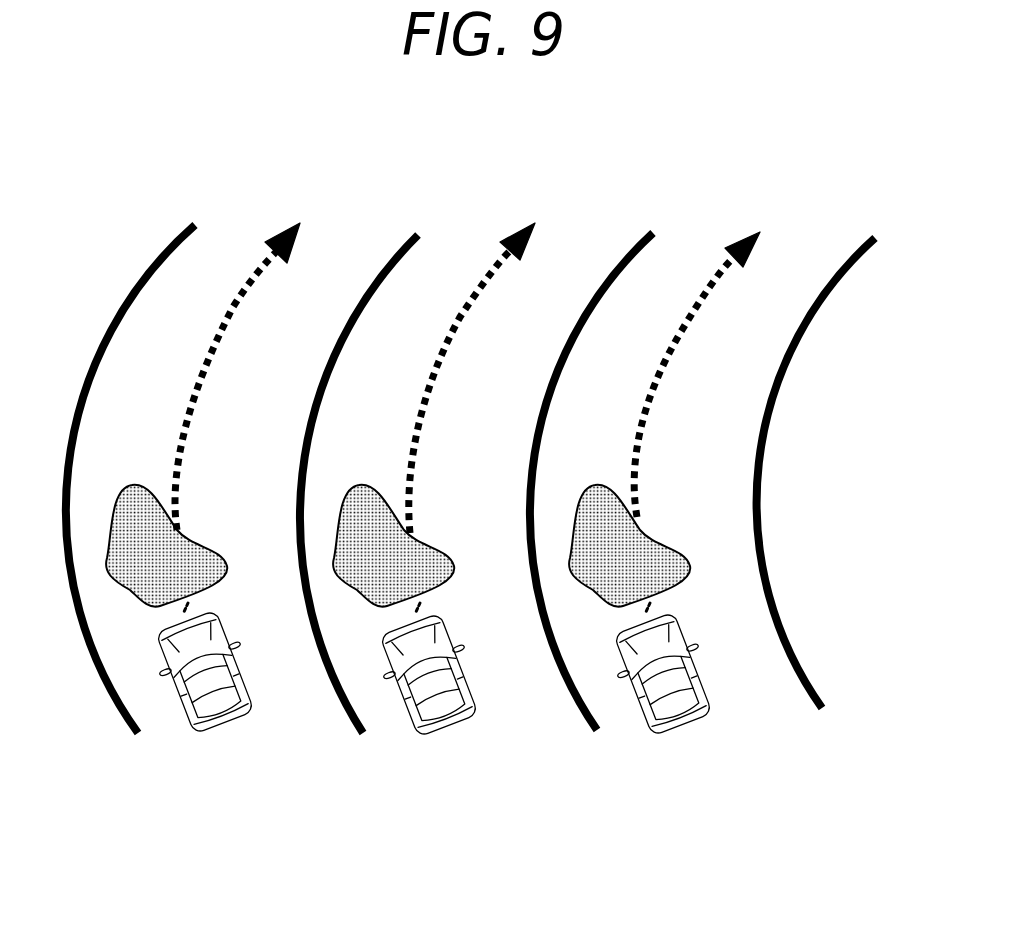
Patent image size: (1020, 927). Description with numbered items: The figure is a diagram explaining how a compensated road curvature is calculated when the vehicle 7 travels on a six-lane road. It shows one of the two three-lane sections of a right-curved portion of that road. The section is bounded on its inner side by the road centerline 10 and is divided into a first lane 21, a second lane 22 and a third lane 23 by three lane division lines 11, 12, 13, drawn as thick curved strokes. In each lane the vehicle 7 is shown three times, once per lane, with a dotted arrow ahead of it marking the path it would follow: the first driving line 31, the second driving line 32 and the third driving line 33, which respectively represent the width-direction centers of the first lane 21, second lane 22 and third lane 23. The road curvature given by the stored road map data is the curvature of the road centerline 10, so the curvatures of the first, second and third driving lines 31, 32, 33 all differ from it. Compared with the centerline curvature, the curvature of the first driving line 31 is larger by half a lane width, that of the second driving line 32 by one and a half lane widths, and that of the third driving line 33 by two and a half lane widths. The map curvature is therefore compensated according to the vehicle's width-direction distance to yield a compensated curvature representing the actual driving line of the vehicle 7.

The vehicle 7 is at (227, 730).
The road centerline 10 is at (778, 392).
The lane division line 11 is at (645, 233).
The lane division line 12 is at (407, 237).
The lane division line 13 is at (175, 237).
The first lane 21 is at (797, 263).
The second lane 22 is at (553, 265).
The third lane 23 is at (317, 267).
The first driving line 31 is at (712, 277).
The second driving line 32 is at (470, 298).
The third driving line 33 is at (238, 296).